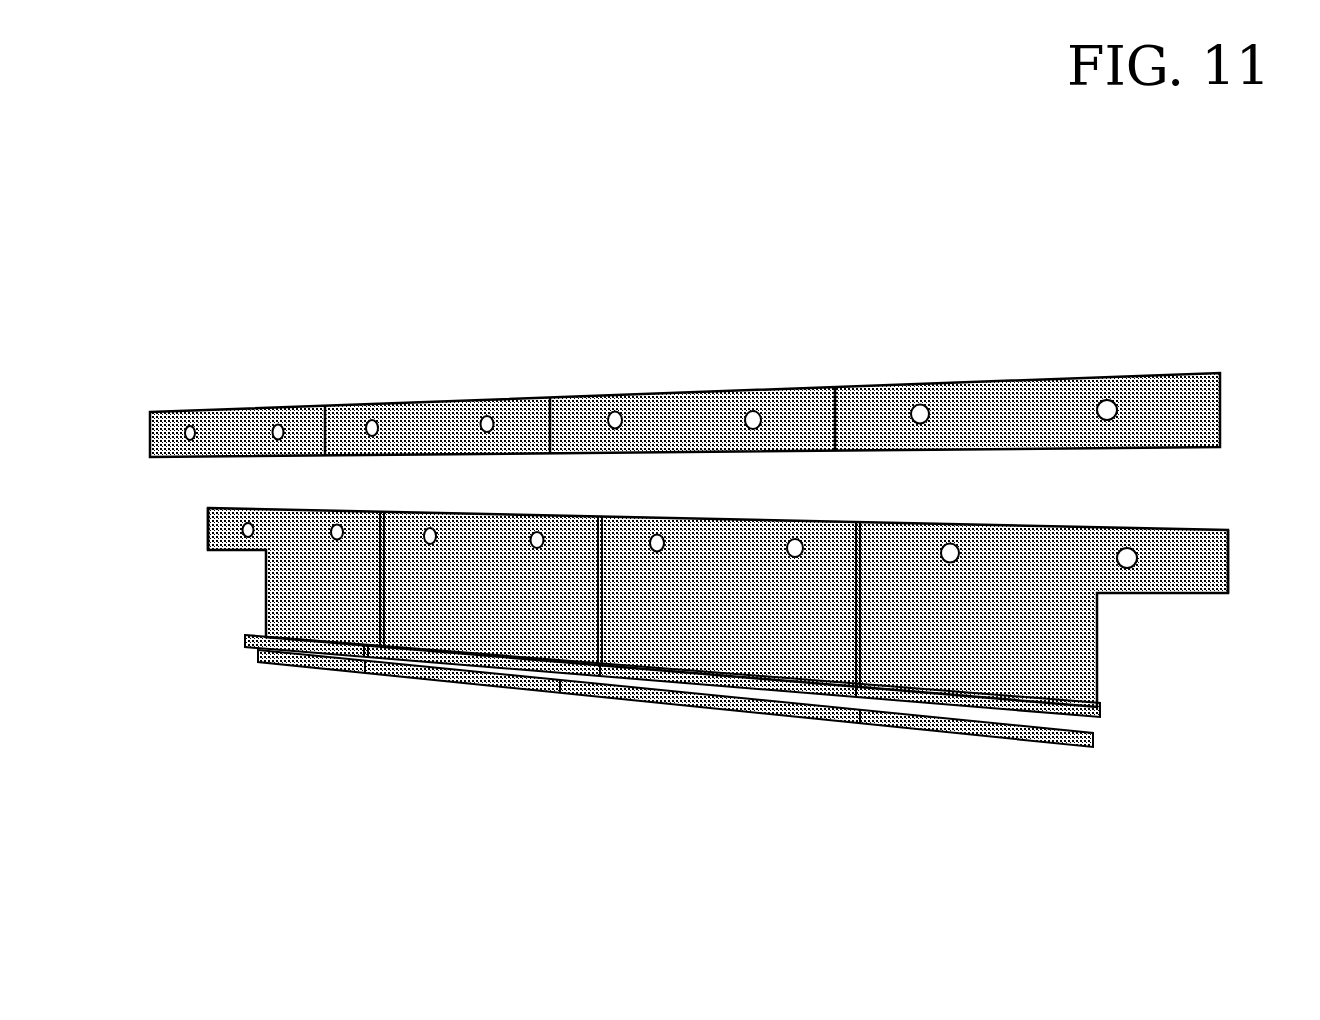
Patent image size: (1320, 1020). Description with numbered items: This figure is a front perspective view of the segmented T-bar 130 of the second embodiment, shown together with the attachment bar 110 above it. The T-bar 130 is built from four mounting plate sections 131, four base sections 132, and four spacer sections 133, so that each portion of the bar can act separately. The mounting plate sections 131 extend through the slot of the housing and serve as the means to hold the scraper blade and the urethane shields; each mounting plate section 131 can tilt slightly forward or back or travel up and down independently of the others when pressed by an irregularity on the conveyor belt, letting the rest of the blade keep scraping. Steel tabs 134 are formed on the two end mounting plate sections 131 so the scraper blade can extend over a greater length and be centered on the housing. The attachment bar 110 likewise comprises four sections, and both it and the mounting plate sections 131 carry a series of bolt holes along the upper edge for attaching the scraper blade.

The attachment bar 110 is at (350, 405).
The T-bar 130 is at (691, 658).
The mounting plate section 131 is at (398, 530).
The base section 132 is at (612, 685).
The spacer section 133 is at (398, 680).
The steel tab 134 is at (250, 553).